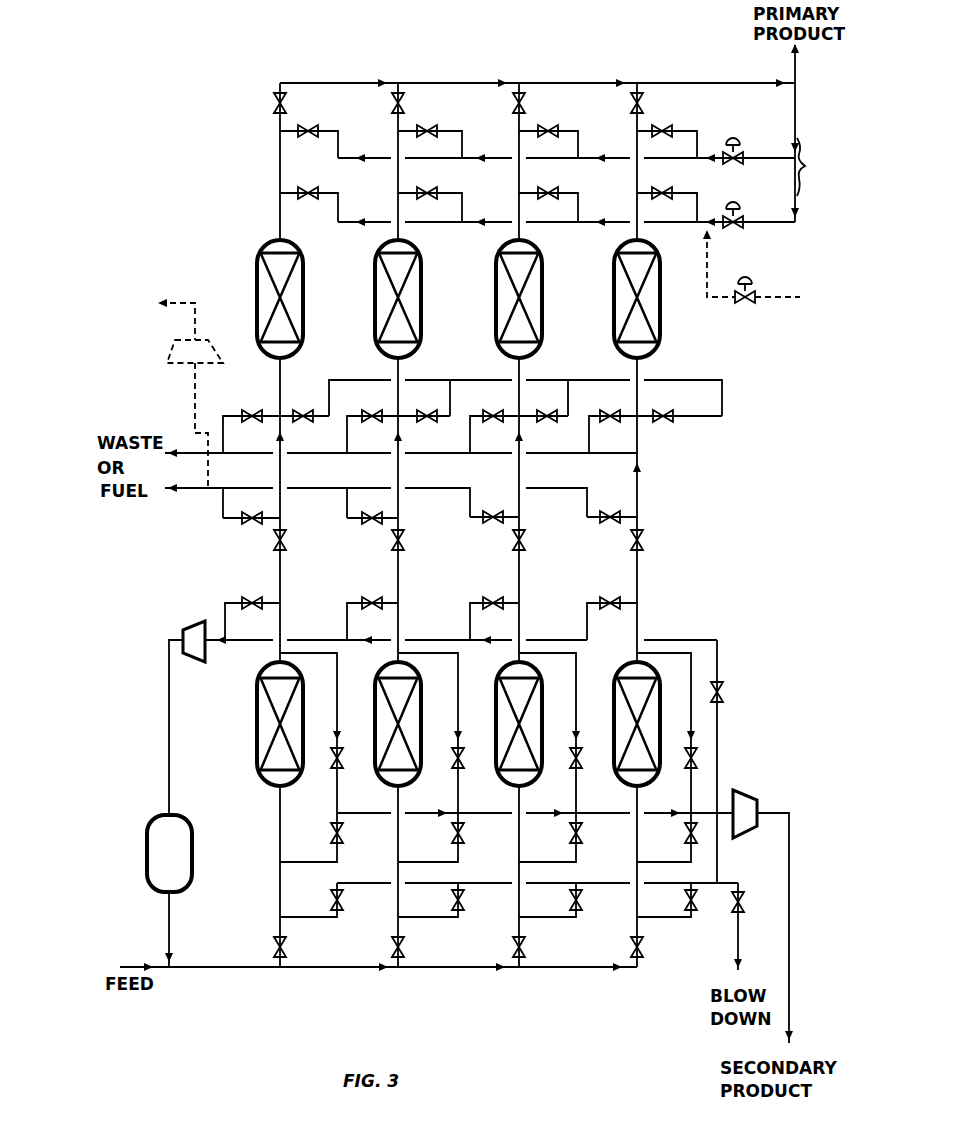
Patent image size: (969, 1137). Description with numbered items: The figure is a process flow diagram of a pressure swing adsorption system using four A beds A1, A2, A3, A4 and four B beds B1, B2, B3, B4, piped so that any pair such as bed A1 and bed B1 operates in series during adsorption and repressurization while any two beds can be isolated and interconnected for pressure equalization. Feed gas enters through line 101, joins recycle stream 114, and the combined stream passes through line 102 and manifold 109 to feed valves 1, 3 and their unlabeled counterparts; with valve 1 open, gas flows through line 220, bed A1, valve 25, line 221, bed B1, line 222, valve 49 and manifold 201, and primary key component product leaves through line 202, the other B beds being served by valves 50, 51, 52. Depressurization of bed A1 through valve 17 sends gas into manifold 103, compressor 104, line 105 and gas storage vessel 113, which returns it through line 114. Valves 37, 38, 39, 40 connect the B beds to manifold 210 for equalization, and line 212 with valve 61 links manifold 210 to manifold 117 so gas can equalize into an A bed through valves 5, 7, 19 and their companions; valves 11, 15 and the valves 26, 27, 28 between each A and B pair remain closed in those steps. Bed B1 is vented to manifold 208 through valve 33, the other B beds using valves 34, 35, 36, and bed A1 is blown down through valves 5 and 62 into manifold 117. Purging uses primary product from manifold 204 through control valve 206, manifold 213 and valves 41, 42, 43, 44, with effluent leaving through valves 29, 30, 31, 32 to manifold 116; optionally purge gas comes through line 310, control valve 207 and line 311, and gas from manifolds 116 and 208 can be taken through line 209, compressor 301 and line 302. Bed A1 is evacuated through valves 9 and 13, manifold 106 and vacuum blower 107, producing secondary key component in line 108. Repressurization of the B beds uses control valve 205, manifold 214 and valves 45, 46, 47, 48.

The valve 1 is at (282, 947).
The valve 3 is at (523, 946).
The valve 5 is at (343, 899).
The valve 7 is at (582, 900).
The valve 9 is at (328, 834).
The valve 11 is at (569, 834).
The valve 13 is at (343, 765).
The valve 15 is at (583, 765).
The valve 17 is at (252, 610).
The valve 19 is at (492, 610).
The valve 25 is at (284, 548).
The valve 26 is at (402, 548).
The valve 27 is at (523, 548).
The valve 28 is at (641, 548).
The valve 29 is at (250, 526).
The valve 30 is at (365, 530).
The valve 31 is at (490, 530).
The valve 32 is at (606, 529).
The valve 33 is at (256, 423).
The valve 34 is at (372, 423).
The valve 35 is at (495, 423).
The valve 36 is at (612, 423).
The valve 37 is at (307, 423).
The valve 38 is at (432, 423).
The valve 39 is at (551, 423).
The valve 40 is at (666, 423).
The valve 41 is at (307, 200).
The valve 42 is at (430, 191).
The valve 43 is at (551, 193).
The valve 44 is at (668, 192).
The valve 45 is at (307, 138).
The valve 46 is at (428, 129).
The valve 47 is at (549, 129).
The valve 48 is at (661, 130).
The valve 49 is at (273, 105).
The valve 50 is at (392, 105).
The valve 51 is at (514, 105).
The valve 52 is at (630, 105).
The valve 61 is at (726, 693).
The valve 62 is at (744, 903).
The line 101 is at (150, 964).
The line 102 is at (225, 965).
The manifold 103 is at (488, 642).
The compressor 104 is at (193, 623).
The line 105 is at (168, 745).
The manifold 106 is at (494, 818).
The vacuum blower 107 is at (753, 798).
The line 108 is at (790, 832).
The manifold 109 is at (440, 971).
The gas storage vessel 113 is at (155, 860).
The line 114 is at (166, 924).
The manifold 116 is at (457, 490).
The manifold 117 is at (491, 885).
The manifold 201 is at (498, 83).
The line 202 is at (790, 70).
The manifold 204 is at (822, 167).
The control valve 205 is at (742, 145).
The control valve 206 is at (741, 210).
The control valve 207 is at (746, 304).
The manifold 208 is at (425, 455).
The line 209 is at (190, 424).
The manifold 210 is at (497, 379).
The line 212 is at (717, 564).
The manifold 213 is at (491, 226).
The manifold 214 is at (495, 160).
The line 220 is at (274, 862).
The line 221 is at (283, 498).
The line 222 is at (278, 173).
The compressor 301 is at (178, 346).
The line 302 is at (204, 298).
The line 310 is at (780, 289).
The line 311 is at (710, 258).
The bed A1 is at (255, 722).
The bed A2 is at (377, 722).
The bed A3 is at (497, 722).
The bed A4 is at (614, 722).
The bed B1 is at (257, 290).
The bed B2 is at (375, 289).
The bed B3 is at (496, 289).
The bed B4 is at (614, 289).